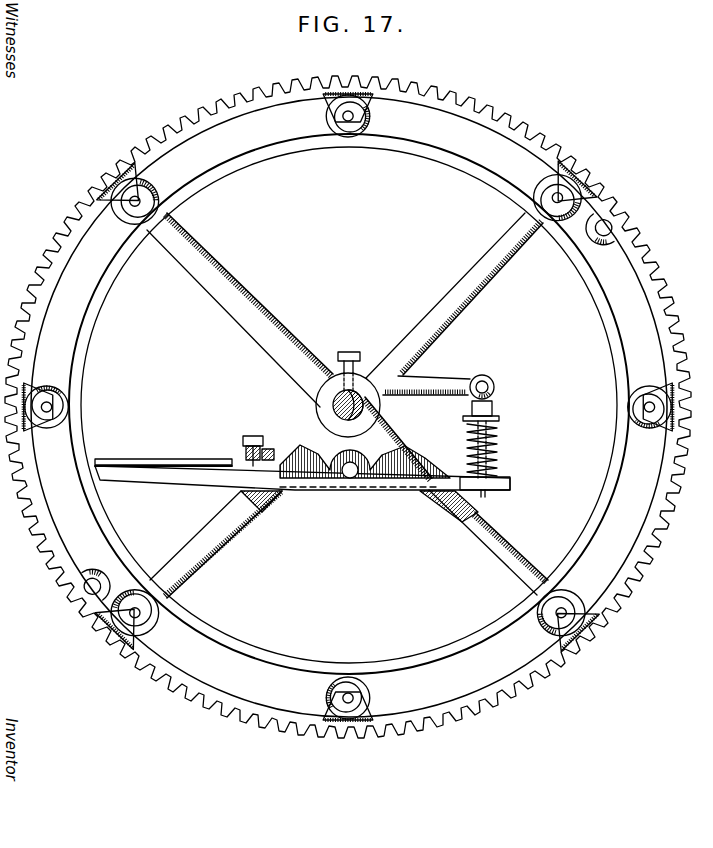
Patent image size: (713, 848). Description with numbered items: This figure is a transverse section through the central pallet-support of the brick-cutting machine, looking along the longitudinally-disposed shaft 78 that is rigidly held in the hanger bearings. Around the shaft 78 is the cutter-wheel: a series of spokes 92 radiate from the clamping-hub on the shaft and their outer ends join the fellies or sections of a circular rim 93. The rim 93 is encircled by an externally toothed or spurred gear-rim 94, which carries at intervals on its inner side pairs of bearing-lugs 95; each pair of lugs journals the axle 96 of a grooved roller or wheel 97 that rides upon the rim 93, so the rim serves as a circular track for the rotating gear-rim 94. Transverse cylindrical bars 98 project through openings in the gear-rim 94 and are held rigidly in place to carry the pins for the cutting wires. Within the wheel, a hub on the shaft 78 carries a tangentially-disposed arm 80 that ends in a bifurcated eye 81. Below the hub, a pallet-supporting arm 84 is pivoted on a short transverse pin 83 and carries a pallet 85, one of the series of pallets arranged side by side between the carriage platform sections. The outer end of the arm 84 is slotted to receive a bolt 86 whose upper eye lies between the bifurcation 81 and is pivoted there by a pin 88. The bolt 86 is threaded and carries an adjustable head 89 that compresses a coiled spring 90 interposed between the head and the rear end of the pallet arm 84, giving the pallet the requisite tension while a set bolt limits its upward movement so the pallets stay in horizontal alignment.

The longitudinally-disposed shaft 78 is at (320, 405).
The tangentially-disposed arm 80 is at (440, 378).
The bifurcated eye 81 is at (484, 378).
The transverse pin 83 is at (350, 478).
The pallet-supporting arm 84 is at (193, 484).
The pallet 85 is at (168, 460).
The bolt 86 is at (485, 491).
The pin 88 is at (495, 387).
The adjustable head 89 is at (493, 410).
The coiled spring 90 is at (499, 442).
The spokes 92 is at (472, 528).
The circular rim 93 is at (617, 366).
The spurred gear-rim 94 is at (452, 96).
The bearing-lugs 95 is at (582, 180).
The axle 96 is at (137, 205).
The grooved roller 97 is at (322, 116).
The transverse cylindrical bars 98 is at (614, 224).